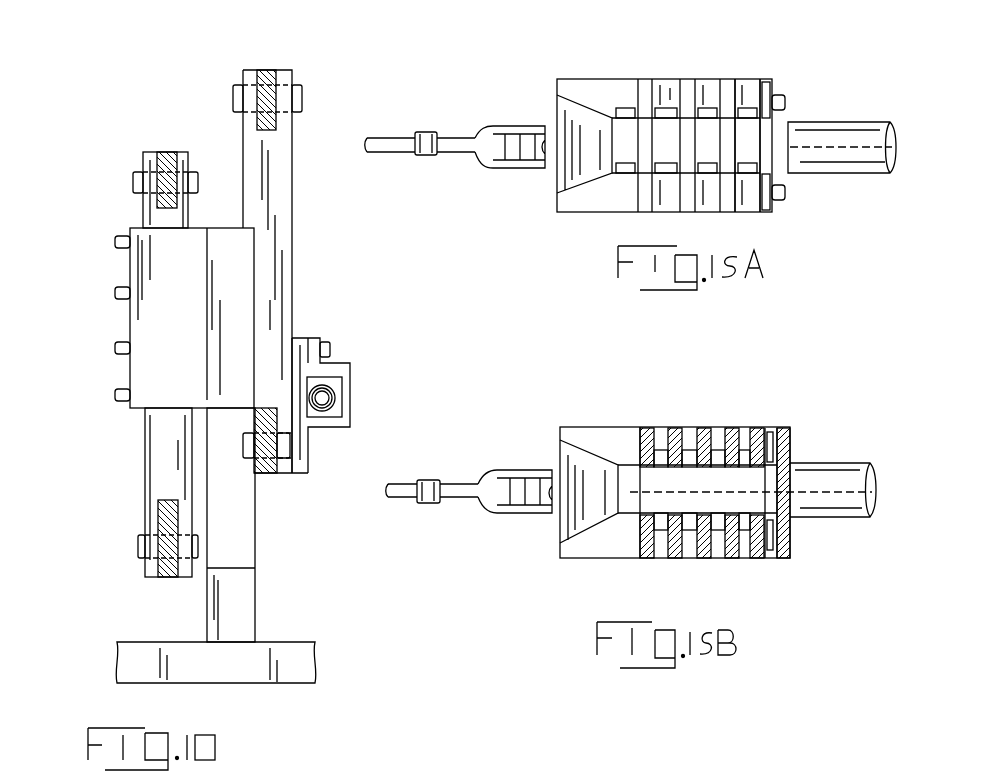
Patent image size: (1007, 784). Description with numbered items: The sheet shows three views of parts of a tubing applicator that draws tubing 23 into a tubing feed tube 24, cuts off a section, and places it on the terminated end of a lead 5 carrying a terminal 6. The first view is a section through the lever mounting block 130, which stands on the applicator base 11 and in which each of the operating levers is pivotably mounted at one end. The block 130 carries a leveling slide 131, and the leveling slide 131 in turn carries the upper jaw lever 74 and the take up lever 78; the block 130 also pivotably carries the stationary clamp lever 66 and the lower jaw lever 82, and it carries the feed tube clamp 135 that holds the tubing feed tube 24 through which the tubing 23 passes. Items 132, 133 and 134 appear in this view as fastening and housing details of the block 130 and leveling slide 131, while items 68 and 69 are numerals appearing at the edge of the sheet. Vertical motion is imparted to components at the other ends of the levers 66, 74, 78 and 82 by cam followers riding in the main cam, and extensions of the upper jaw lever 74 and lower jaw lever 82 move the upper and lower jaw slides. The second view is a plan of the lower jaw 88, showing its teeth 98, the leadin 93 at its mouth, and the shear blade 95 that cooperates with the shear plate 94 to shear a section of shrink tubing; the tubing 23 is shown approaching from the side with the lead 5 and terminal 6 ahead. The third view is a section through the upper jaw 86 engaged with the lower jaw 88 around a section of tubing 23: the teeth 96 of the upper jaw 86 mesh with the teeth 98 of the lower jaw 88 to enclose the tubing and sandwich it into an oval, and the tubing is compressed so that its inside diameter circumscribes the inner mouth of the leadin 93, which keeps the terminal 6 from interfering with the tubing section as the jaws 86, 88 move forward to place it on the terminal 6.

In FIG. 15A, the lead 5 is at (391, 135).
In FIG. 15B, the lead 5 is at (408, 482).
In FIG. 15A, the terminal 6 is at (508, 128).
In FIG. 15B, the terminal 6 is at (510, 468).
In FIG. 10, the applicator base 11 is at (315, 668).
In FIG. 10, the tubing 23 is at (322, 405).
In FIG. 15A, the tubing 23 is at (850, 122).
In FIG. 15B, the tubing 23 is at (845, 463).
In FIG. 10, the tubing feed tube 24 is at (342, 400).
In FIG. 10, the stationary clamp lever 66 is at (268, 82).
In FIG. 10, the member 68 is at (510, 783).
In FIG. 10, the member 69 is at (454, 772).
In FIG. 10, the upper jaw lever 74 is at (160, 200).
In FIG. 10, the take up lever 78 is at (165, 580).
In FIG. 10, the lower jaw lever 82 is at (272, 475).
In FIG. 15B, the upper jaw 86 is at (740, 432).
In FIG. 15A, the lower jaw 88 is at (730, 80).
In FIG. 15B, the lower jaw 88 is at (726, 428).
In FIG. 15A, the leadin 93 is at (587, 90).
In FIG. 15B, the leadin 93 is at (600, 427).
In FIG. 15B, the shear plate 94 is at (785, 535).
In FIG. 15A, the shear blade 95 is at (778, 95).
In FIG. 15B, the shear blade 95 is at (770, 450).
In FIG. 15B, the teeth 96 is at (677, 428).
In FIG. 15A, the teeth 98 is at (712, 80).
In FIG. 10, the lever mounting block 130 is at (305, 340).
In FIG. 10, the leveling slide 131 is at (150, 152).
In FIG. 10, the bolt 132 is at (137, 182).
In FIG. 10, the bolt 133 is at (140, 545).
In FIG. 10, the housing box 134 is at (130, 318).
In FIG. 10, the feed tube clamp 135 is at (350, 420).